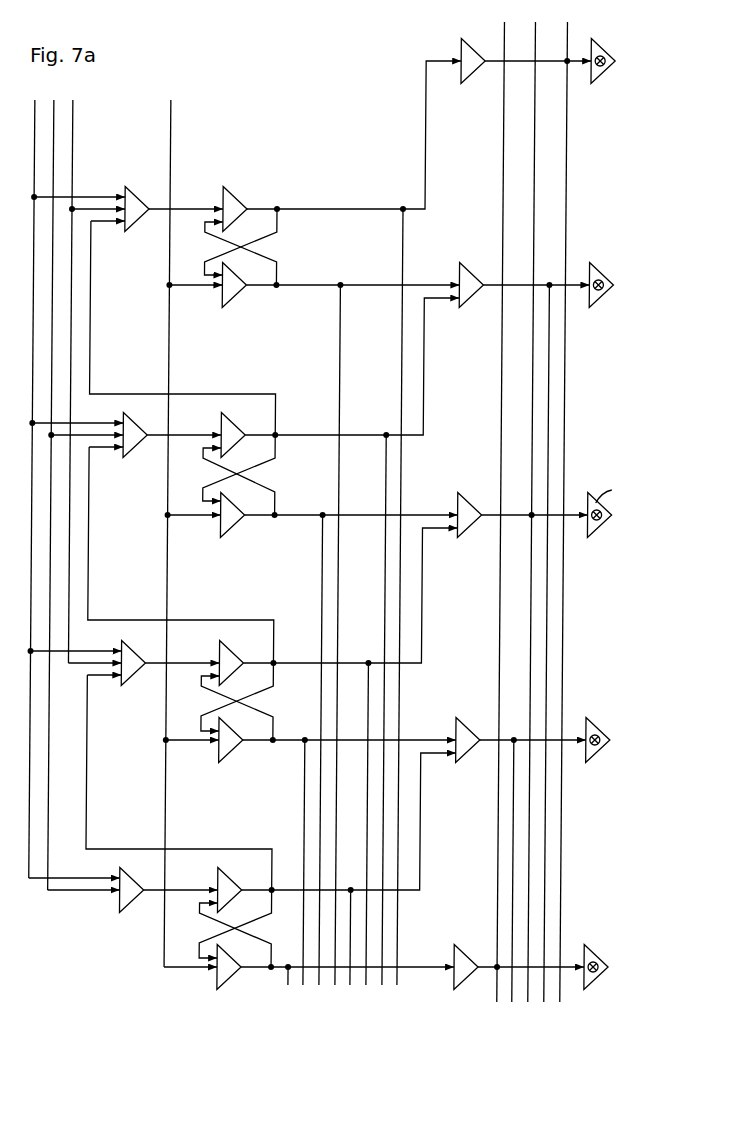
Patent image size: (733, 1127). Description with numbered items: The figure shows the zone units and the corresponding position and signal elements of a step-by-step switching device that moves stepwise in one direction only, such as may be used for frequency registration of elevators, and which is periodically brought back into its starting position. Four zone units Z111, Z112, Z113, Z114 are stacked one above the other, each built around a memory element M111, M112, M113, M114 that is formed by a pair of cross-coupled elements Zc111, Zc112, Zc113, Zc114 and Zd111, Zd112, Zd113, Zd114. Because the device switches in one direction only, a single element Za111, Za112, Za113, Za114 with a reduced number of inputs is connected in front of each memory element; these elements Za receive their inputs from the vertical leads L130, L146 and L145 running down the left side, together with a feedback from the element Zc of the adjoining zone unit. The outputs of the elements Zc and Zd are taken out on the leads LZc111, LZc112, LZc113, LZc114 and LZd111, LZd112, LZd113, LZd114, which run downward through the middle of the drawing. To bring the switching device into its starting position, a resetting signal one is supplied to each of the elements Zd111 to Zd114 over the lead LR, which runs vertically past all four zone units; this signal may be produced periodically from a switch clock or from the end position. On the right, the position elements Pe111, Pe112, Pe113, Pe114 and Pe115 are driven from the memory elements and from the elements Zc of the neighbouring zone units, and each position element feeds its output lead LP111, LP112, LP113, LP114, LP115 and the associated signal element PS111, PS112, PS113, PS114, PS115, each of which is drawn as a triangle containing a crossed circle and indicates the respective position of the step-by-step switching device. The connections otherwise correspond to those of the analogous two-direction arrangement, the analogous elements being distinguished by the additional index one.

The lead L130 is at (25, 489).
The lead L146 is at (44, 495).
The lead L145 is at (63, 381).
The lead LR is at (159, 533).
The position element output lead LP111 is at (494, 527).
The position element output lead LP112 is at (506, 891).
The position element output lead LP113 is at (525, 527).
The position element output lead LP114 is at (540, 663).
The position element output lead LP115 is at (557, 527).
The output lead of element Zd LZd111 is at (281, 1003).
The output lead of element Zd LZd112 is at (296, 889).
The output lead of element Zd LZd113 is at (313, 777).
The output lead of element Zd LZd114 is at (330, 662).
The output lead of element Zc LZc111 is at (343, 964).
The output lead of element Zc LZc112 is at (360, 851).
The output lead of element Zc LZc113 is at (377, 737).
The output lead of element Zc LZc114 is at (393, 624).
The element Za Za111 is at (133, 906).
The element Za Za112 is at (133, 679).
The element Za Za113 is at (133, 451).
The element Za Za114 is at (133, 225).
The element Zc Zc111 is at (246, 885).
The element Zc Zc112 is at (246, 658).
The element Zc Zc113 is at (246, 430).
The element Zc Zc114 is at (246, 204).
The element Zd Zd111 is at (236, 977).
The element Zd Zd112 is at (236, 750).
The element Zd Zd113 is at (236, 525).
The element Zd Zd114 is at (236, 295).
The memory element M111 is at (242, 928).
The memory element M112 is at (246, 701).
The memory element M113 is at (247, 475).
The memory element M114 is at (248, 247).
The zone unit Z111 is at (161, 969).
The zone unit Z112 is at (163, 737).
The zone unit Z113 is at (165, 507).
The zone unit Z114 is at (166, 278).
The position element Pe111 is at (468, 978).
The position element Pe112 is at (468, 751).
The position element Pe113 is at (468, 526).
The position element Pe114 is at (468, 296).
The position element Pe115 is at (468, 72).
The signal element PS111 is at (598, 978).
The signal element PS112 is at (598, 751).
The signal element PS113 is at (598, 526).
The signal element PS114 is at (598, 296).
The signal element PS115 is at (598, 72).